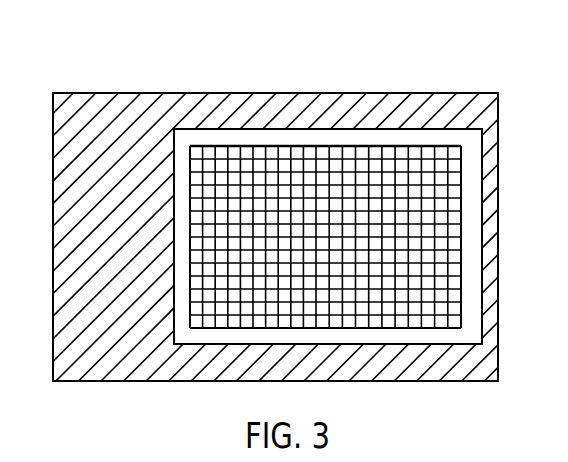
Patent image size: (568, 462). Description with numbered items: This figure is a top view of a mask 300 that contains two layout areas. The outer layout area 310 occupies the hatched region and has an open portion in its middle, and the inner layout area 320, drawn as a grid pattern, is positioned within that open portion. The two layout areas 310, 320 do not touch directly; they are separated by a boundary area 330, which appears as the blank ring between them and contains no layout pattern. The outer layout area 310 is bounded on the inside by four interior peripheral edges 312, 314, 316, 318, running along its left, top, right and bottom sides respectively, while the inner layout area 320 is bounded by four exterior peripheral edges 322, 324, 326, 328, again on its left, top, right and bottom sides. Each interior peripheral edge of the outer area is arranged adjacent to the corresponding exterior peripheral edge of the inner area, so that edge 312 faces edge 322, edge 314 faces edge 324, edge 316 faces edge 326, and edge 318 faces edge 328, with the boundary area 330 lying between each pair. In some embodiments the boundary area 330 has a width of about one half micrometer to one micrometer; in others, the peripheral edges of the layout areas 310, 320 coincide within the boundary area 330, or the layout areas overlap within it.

The mask 300 is at (445, 78).
The layout area 310 is at (92, 169).
The interior peripheral edge 312 is at (174, 190).
The interior peripheral edge 314 is at (278, 128).
The interior peripheral edge 316 is at (484, 148).
The interior peripheral edge 318 is at (366, 348).
The layout area 320 is at (360, 153).
The exterior peripheral edge 322 is at (190, 267).
The exterior peripheral edge 324 is at (320, 146).
The exterior peripheral edge 326 is at (462, 168).
The exterior peripheral edge 328 is at (417, 327).
The boundary area 330 is at (473, 228).